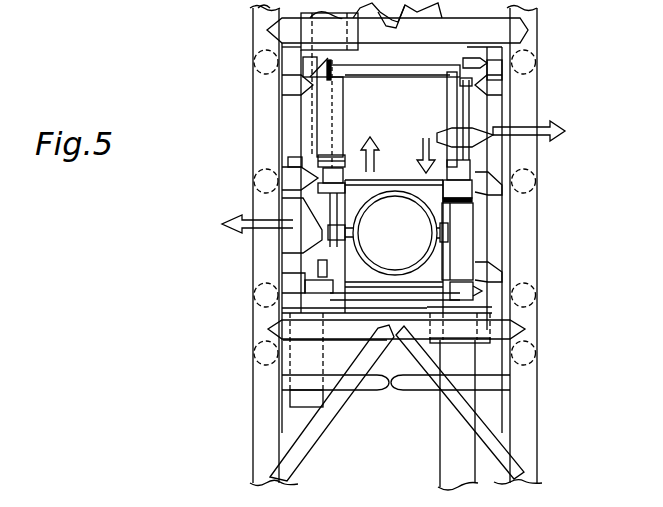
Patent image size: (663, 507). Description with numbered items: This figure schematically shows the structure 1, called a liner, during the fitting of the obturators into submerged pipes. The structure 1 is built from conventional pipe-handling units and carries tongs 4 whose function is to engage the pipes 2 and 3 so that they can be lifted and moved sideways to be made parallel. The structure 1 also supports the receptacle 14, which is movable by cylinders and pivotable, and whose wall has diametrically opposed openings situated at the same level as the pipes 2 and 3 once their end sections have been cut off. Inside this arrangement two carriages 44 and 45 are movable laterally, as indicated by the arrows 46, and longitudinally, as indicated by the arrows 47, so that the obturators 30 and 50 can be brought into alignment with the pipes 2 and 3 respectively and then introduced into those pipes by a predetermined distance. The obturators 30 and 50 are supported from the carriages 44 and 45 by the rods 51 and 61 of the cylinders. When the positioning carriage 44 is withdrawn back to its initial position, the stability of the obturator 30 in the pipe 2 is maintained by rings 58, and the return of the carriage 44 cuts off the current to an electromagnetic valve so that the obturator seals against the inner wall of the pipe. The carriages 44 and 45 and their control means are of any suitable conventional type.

The structure 1 is at (238, 46).
The pipe 2 is at (312, 78).
The pipe 3 is at (452, 458).
The tongs 4 is at (282, 18).
The receptacle 14 is at (415, 248).
The obturator 30 is at (362, 165).
The carriage 44 is at (298, 238).
The carriage 45 is at (483, 142).
The arrows 46 is at (240, 220).
The arrows 47 is at (374, 164).
The obturator 50 is at (475, 193).
The rod 51 is at (325, 197).
The rings 58 is at (330, 157).
The rod 61 is at (457, 127).